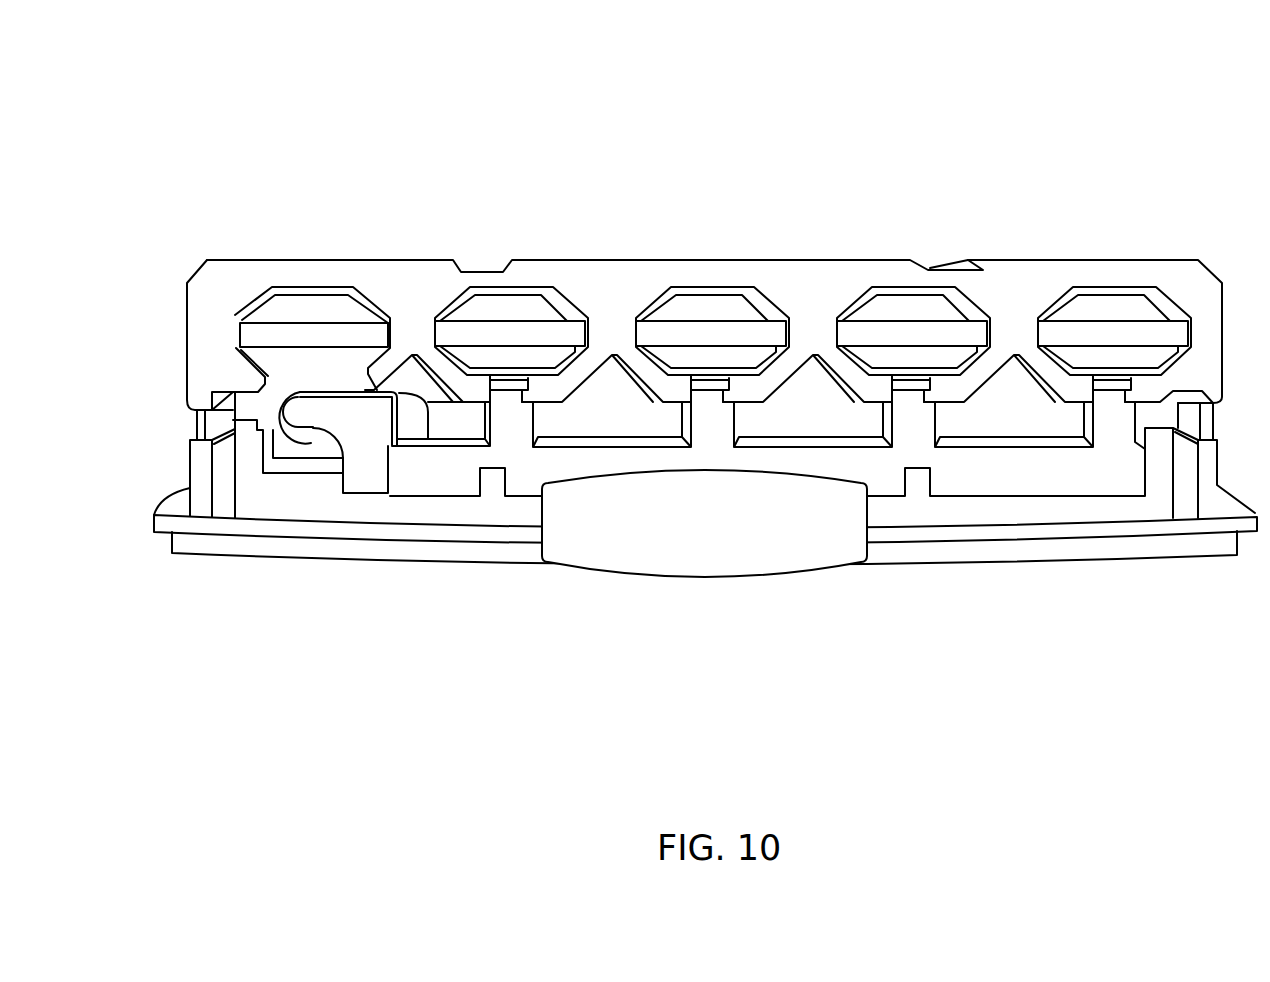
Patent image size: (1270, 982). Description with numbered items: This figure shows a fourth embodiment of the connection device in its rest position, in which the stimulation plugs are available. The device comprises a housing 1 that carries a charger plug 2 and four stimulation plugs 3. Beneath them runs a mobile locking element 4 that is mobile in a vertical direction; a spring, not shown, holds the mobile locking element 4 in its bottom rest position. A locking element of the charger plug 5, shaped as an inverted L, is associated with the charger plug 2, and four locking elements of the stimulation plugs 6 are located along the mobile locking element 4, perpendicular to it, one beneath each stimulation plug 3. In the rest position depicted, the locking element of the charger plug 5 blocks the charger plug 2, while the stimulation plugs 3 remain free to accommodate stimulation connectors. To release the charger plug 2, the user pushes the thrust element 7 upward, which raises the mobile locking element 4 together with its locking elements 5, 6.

The housing 1 is at (828, 200).
The charger plug 2 is at (287, 382).
The stimulation plug 3 is at (521, 312).
The mobile locking element 4 is at (528, 490).
The locking element of the charger plug 5 is at (333, 430).
The locking element of the stimulation plug 6 is at (512, 407).
The thrust element 7 is at (737, 565).